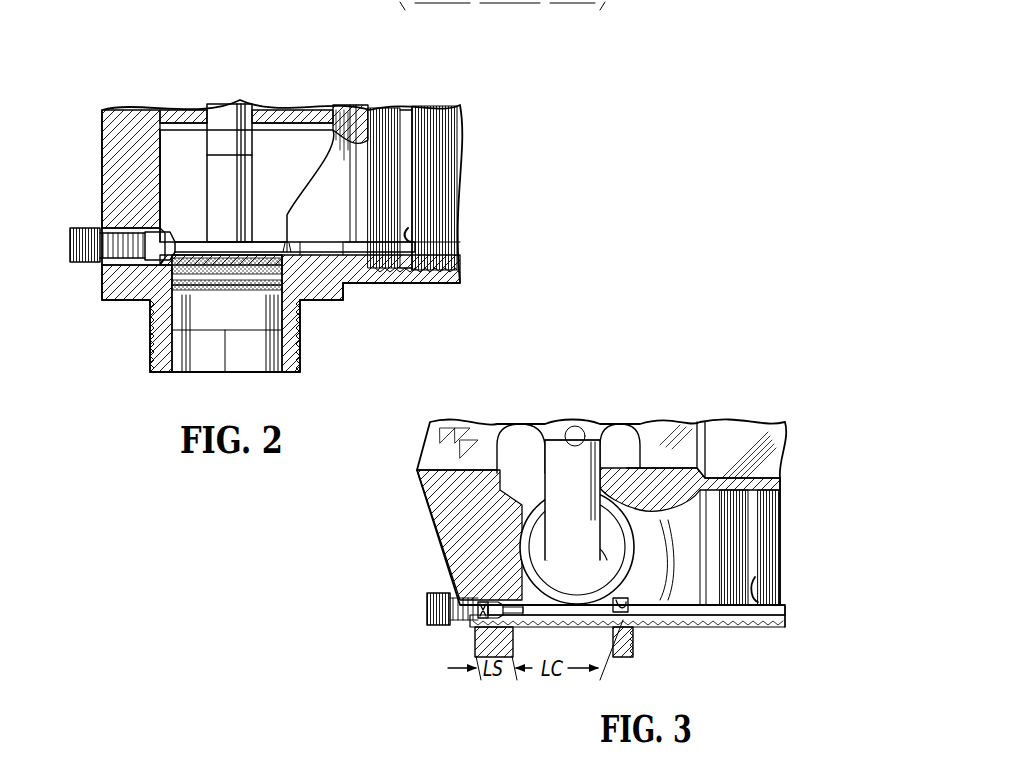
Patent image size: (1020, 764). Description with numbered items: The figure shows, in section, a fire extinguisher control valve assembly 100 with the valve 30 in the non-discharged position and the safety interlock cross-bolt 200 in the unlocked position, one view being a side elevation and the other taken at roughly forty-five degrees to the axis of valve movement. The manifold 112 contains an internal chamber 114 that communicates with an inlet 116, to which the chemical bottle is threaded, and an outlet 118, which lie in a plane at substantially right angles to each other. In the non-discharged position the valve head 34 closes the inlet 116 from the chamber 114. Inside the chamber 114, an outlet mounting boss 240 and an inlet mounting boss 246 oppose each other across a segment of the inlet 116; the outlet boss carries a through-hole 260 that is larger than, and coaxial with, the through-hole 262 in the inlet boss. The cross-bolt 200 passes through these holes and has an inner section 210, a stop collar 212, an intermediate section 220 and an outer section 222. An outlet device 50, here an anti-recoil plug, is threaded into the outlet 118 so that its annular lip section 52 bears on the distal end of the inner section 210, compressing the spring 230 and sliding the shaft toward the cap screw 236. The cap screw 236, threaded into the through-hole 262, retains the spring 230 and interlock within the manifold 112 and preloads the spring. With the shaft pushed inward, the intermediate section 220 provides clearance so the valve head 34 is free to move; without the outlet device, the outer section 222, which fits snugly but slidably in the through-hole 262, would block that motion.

In FIG. 2, the fire extinguisher control valve assembly 100 is at (197, 42).
In FIG. 3, the fire extinguisher control valve assembly 100 is at (620, 384).
In FIG. 2, the valve 30 is at (212, 140).
In FIG. 3, the valve 30 is at (526, 475).
In FIG. 2, the valve head 34 is at (215, 287).
In FIG. 2, the outlet device 50 is at (425, 176).
In FIG. 3, the outlet device 50 is at (785, 512).
In FIG. 2, the annular lip section 52 is at (408, 240).
In FIG. 3, the annular lip section 52 is at (755, 580).
In FIG. 2, the manifold 112 is at (112, 145).
In FIG. 3, the manifold 112 is at (472, 478).
In FIG. 2, the chamber 114 is at (270, 158).
In FIG. 2, the inlet 116 is at (283, 330).
In FIG. 2, the outlet 118 is at (405, 265).
In FIG. 2, the safety interlock cross-bolt 200 is at (360, 258).
In FIG. 3, the safety interlock cross-bolt 200 is at (790, 615).
In FIG. 3, the inner section 210 is at (702, 620).
In FIG. 3, the stop collar 212 is at (624, 608).
In FIG. 3, the intermediate section 220 is at (588, 618).
In FIG. 2, the outer section 222 is at (160, 255).
In FIG. 3, the outer section 222 is at (478, 617).
In FIG. 2, the spring 230 is at (125, 262).
In FIG. 3, the spring 230 is at (487, 603).
In FIG. 2, the cap screw 236 is at (88, 228).
In FIG. 3, the cap screw 236 is at (427, 608).
In FIG. 2, the outlet mounting boss 240 is at (287, 217).
In FIG. 2, the inlet mounting boss 246 is at (160, 215).
In FIG. 2, the outlet mounting boss through-hole 260 is at (313, 302).
In FIG. 2, the inlet mounting boss through-hole 262 is at (237, 248).